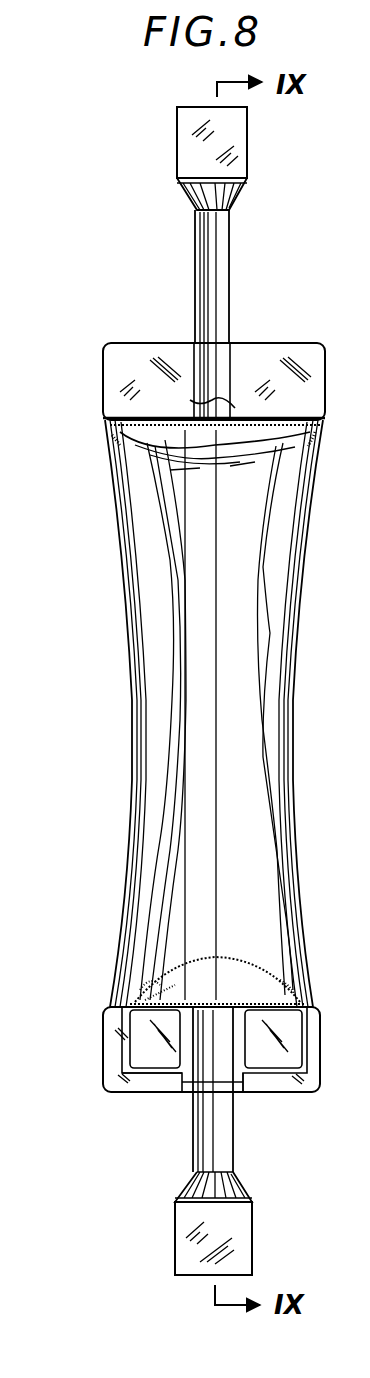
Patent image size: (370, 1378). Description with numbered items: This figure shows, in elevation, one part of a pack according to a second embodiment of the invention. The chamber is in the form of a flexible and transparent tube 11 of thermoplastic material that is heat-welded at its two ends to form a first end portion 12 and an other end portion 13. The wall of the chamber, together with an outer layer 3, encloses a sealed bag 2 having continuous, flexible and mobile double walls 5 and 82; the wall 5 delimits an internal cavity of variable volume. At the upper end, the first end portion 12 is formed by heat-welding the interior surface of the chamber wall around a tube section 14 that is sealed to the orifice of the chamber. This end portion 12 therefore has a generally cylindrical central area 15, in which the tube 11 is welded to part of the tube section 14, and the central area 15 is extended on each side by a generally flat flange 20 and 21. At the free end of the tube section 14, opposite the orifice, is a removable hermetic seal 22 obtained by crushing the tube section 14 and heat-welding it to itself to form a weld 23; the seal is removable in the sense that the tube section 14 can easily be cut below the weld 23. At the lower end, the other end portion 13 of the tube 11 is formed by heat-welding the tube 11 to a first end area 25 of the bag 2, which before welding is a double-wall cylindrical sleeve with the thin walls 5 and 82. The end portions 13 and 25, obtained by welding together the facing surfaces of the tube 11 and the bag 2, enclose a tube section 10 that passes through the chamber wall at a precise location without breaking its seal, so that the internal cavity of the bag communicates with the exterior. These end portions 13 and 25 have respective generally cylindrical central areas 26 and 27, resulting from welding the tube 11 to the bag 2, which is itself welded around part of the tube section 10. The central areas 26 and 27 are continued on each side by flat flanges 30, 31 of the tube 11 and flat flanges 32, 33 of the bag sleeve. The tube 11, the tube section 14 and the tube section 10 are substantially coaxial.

The bag 2 is at (170, 695).
The outer wall 3 is at (155, 650).
The wall 5 is at (170, 733).
The tube section 10 is at (192, 1158).
The tube 11 is at (181, 713).
The first end portion 12 is at (207, 349).
The other end portion 13 is at (172, 1082).
The tube section 14 is at (194, 262).
The central area 15 is at (196, 365).
The flange 20 is at (118, 373).
The flange 21 is at (312, 380).
The removable hermetic seal 22 is at (177, 152).
The weld 23 is at (247, 161).
The first end area 25 is at (145, 1080).
The central area 26 is at (232, 1083).
The central area 27 is at (245, 1078).
The flat flange 30 is at (209, 1078).
The flat flange 31 is at (308, 1090).
The flat flange 32 is at (140, 1028).
The flat flange 33 is at (285, 1033).
The wall 82 is at (163, 798).